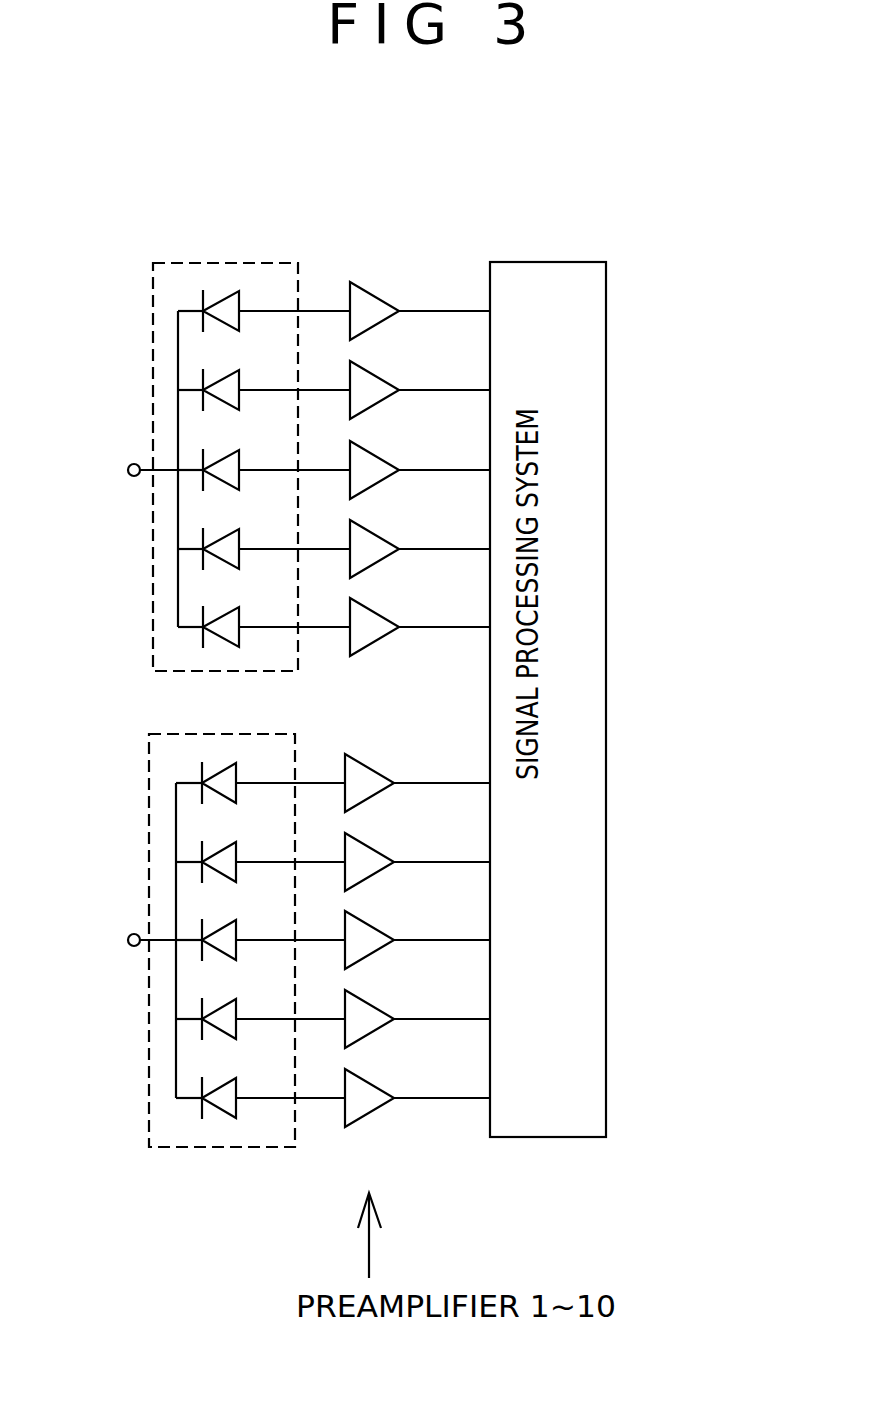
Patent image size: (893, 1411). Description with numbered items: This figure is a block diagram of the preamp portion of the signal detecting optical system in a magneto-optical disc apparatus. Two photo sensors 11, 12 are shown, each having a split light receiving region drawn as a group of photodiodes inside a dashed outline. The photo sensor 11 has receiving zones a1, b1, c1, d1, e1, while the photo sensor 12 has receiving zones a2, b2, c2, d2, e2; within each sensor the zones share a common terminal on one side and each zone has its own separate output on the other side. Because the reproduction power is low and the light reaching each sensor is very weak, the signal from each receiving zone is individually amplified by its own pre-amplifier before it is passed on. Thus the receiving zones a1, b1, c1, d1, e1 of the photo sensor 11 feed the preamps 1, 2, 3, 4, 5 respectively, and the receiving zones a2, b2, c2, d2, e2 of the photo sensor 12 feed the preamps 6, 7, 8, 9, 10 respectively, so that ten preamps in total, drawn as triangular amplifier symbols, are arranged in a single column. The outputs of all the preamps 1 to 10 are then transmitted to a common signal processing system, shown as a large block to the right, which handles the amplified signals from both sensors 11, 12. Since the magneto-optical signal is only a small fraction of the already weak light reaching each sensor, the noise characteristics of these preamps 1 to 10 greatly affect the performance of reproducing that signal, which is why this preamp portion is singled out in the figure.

The preamp 1 is at (420, 311).
The preamp 2 is at (420, 390).
The preamp 3 is at (420, 470).
The preamp 4 is at (420, 549).
The preamp 5 is at (420, 627).
The preamp 6 is at (417, 783).
The preamp 7 is at (417, 862).
The preamp 8 is at (417, 940).
The preamp 9 is at (417, 1019).
The preamp 10 is at (417, 1098).
The photo sensor 11 is at (211, 467).
The photo sensor 12 is at (190, 940).
The receiving zone a1 is at (264, 303).
The receiving zone b1 is at (264, 382).
The receiving zone c1 is at (264, 462).
The receiving zone d1 is at (264, 541).
The receiving zone e1 is at (264, 619).
The receiving zone a2 is at (260, 775).
The receiving zone b2 is at (260, 854).
The receiving zone c2 is at (260, 932).
The receiving zone d2 is at (260, 1011).
The receiving zone e2 is at (260, 1090).